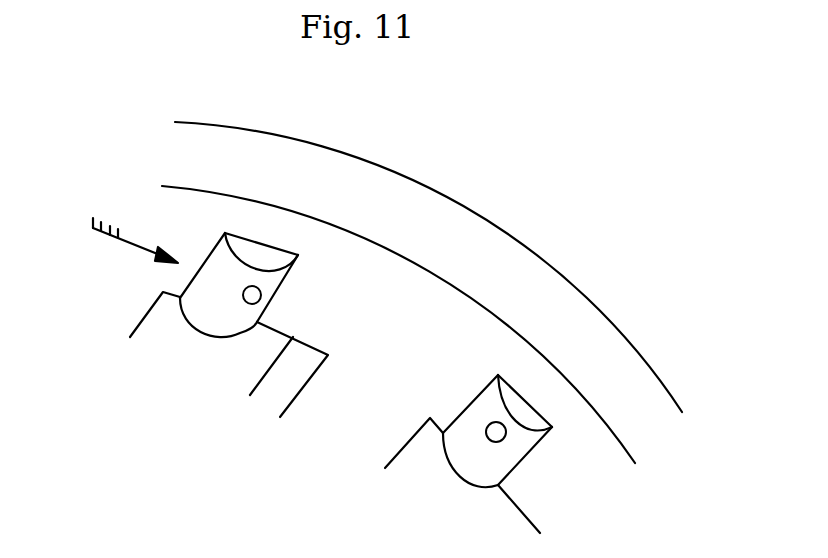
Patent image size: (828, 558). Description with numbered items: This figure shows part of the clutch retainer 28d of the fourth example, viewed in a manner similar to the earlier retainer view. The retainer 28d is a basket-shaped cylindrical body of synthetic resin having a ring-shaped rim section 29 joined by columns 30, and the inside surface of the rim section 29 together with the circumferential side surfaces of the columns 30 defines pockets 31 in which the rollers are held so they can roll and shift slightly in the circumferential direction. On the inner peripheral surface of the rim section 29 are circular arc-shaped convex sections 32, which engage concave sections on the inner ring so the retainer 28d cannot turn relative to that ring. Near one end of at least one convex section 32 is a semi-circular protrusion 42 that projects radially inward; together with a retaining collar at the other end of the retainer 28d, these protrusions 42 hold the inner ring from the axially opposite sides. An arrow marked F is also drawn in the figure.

The clutch retainer 28d is at (546, 270).
The rim section 29 is at (372, 247).
The column 30 is at (358, 400).
The pocket 31 is at (155, 312).
The convex section 32 is at (215, 315).
The protrusion 42 is at (250, 287).
The force direction F is at (140, 243).